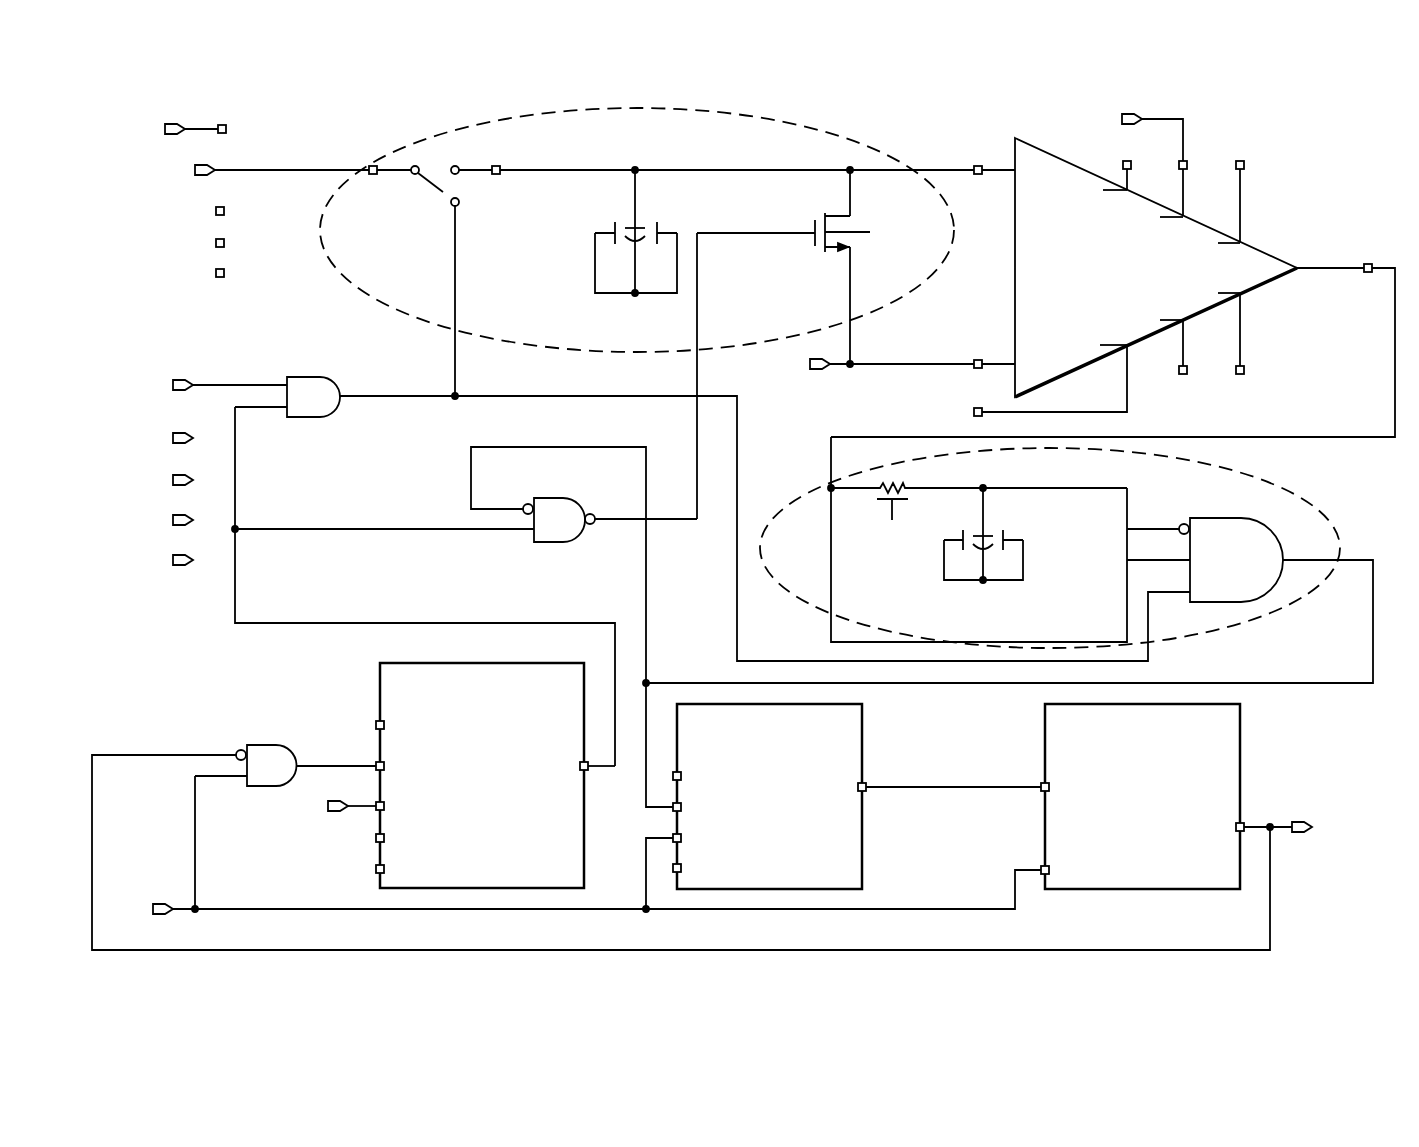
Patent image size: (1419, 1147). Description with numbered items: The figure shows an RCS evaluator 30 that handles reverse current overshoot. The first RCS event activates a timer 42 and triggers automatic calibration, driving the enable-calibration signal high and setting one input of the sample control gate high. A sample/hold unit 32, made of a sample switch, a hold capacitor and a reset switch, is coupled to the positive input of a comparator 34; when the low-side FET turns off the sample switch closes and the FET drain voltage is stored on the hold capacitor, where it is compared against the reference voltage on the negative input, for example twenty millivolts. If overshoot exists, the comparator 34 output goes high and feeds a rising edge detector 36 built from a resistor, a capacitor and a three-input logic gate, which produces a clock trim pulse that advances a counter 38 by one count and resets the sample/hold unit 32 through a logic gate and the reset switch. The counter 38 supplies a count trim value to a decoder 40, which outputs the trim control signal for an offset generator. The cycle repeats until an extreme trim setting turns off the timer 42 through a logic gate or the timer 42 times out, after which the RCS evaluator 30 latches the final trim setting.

The RCS evaluator 30 is at (1333, 153).
The sample/hold unit 32 is at (858, 143).
The comparator 34 is at (1257, 243).
The rising edge detector 36 is at (1308, 497).
The counter 38 is at (862, 826).
The decoder 40 is at (1143, 889).
The timer 42 is at (380, 705).